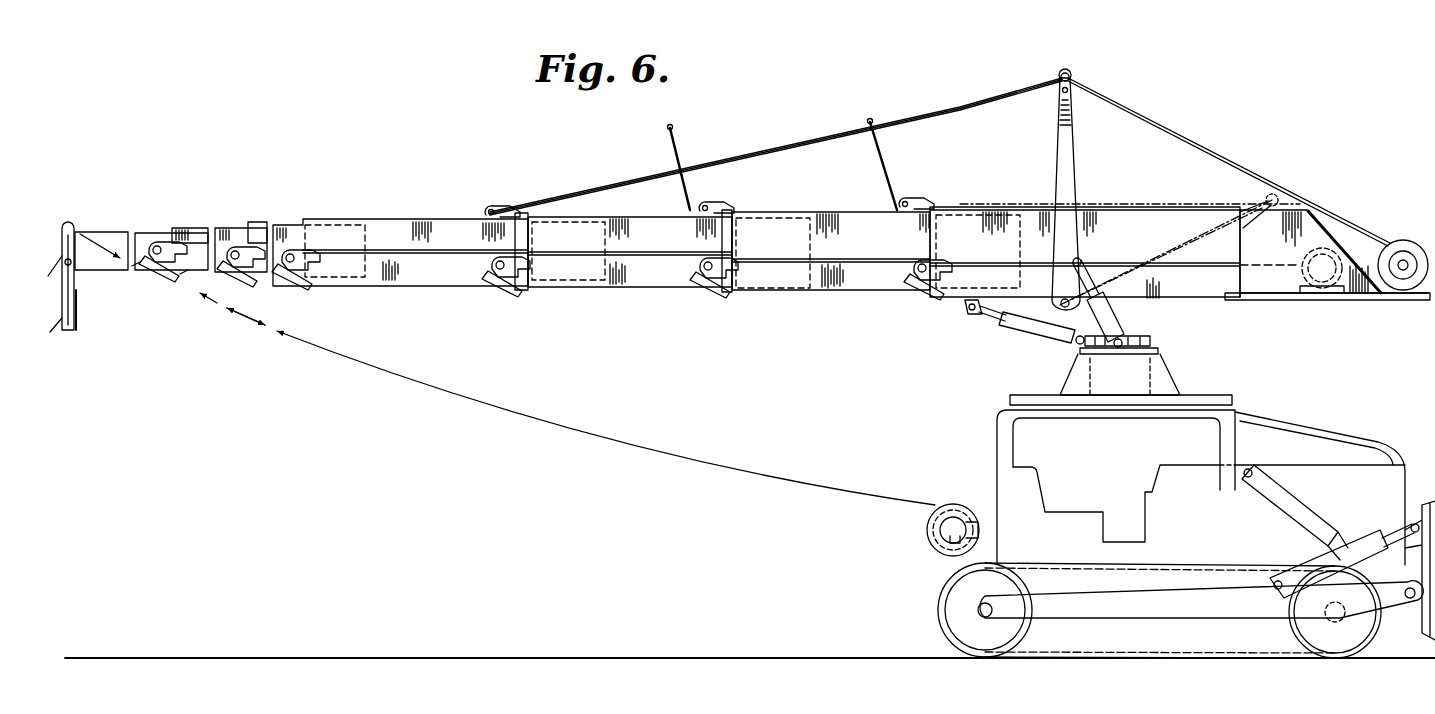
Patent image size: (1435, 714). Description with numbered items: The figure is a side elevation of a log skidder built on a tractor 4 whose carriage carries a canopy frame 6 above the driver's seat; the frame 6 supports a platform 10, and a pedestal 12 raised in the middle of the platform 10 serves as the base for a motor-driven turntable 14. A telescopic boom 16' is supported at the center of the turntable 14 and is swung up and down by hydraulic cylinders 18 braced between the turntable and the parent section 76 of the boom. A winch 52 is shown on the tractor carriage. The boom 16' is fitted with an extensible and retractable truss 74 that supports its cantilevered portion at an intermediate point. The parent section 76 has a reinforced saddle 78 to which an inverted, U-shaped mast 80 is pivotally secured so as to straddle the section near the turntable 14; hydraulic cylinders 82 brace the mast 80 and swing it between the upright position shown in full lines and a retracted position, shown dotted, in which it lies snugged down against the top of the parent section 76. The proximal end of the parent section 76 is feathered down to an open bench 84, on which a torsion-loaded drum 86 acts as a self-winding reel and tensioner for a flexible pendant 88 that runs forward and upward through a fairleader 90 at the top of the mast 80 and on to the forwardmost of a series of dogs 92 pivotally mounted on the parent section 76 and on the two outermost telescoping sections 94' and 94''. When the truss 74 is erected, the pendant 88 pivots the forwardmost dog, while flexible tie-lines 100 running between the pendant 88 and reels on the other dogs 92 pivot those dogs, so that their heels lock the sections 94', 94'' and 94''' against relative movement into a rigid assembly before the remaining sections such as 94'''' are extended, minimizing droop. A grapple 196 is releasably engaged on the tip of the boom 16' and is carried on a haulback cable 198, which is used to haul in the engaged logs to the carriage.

The tractor 4 is at (1358, 422).
The canopy frame 6 is at (990, 420).
The platform 10 is at (1232, 393).
The pedestal 12 is at (1176, 380).
The turntable 14 is at (1158, 341).
The telescopic boom 16' is at (965, 161).
The hydraulic cylinders 18 is at (1010, 334).
The winch 52 is at (957, 502).
The extensible and retractable truss 74 is at (945, 88).
The parent section 76 is at (1106, 212).
The reinforced saddle 78 is at (1185, 303).
The mast 80 is at (1078, 147).
The hydraulic cylinders 82 is at (1126, 314).
The open bench 84 is at (1406, 300).
The torsion-loaded drum 86 is at (1414, 244).
The flexible pendant 88 is at (632, 176).
The fairleader 90 is at (1058, 74).
The dogs 92 is at (489, 204).
The telescoping section 94' is at (810, 269).
The telescoping section 94'' is at (607, 266).
The telescoping section 94''' is at (400, 264).
The telescoping section 94'''' is at (170, 280).
The flexible tie-lines 100 is at (672, 193).
The grapple 196 is at (118, 310).
The haulback cable 198 is at (512, 414).